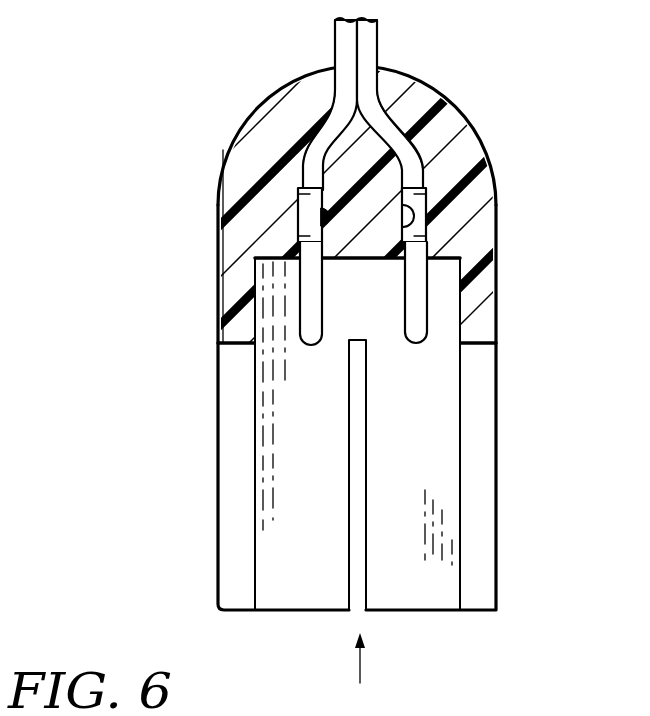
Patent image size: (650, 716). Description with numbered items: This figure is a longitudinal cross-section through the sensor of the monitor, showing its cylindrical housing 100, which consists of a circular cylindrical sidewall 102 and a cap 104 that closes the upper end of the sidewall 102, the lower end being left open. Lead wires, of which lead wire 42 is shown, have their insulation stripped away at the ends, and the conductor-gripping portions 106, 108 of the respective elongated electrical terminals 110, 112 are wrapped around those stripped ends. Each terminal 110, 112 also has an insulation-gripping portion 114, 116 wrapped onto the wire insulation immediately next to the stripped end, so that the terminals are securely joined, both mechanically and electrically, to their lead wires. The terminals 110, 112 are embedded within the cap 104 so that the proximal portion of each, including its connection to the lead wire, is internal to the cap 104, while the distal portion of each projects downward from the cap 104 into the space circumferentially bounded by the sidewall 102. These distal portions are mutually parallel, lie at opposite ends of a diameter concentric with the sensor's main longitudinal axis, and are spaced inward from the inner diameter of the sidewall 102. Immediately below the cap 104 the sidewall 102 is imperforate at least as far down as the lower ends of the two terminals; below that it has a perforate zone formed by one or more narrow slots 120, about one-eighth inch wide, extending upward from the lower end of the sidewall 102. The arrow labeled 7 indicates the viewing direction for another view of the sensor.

The lead wire 42 is at (378, 42).
The cylindrical housing 100 is at (505, 146).
The circular cylindrical sidewall 102 is at (499, 389).
The cap 104 is at (448, 122).
The conductor-gripping portion 106 is at (298, 233).
The conductor-gripping portion 108 is at (425, 229).
The elongated electrical terminal 110 is at (300, 323).
The elongated electrical terminal 112 is at (425, 323).
The insulation-gripping portion 114 is at (298, 195).
The insulation-gripping portion 116 is at (428, 194).
The narrow slots 120 is at (482, 468).
The section view direction arrow 7 is at (373, 663).